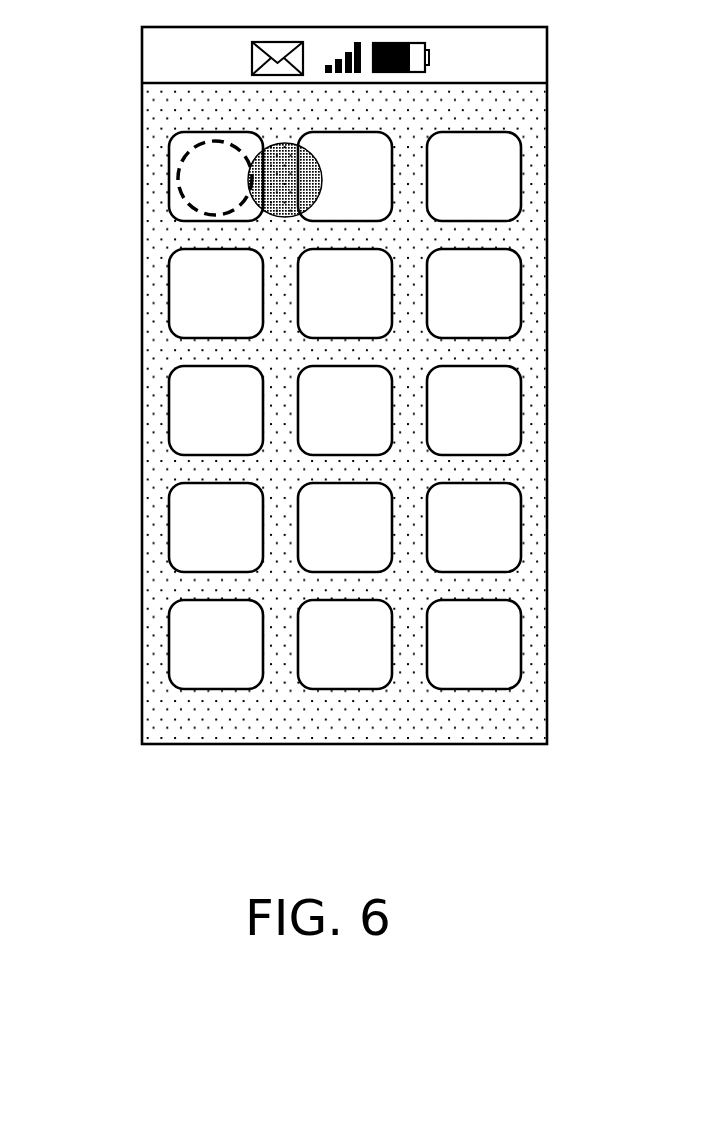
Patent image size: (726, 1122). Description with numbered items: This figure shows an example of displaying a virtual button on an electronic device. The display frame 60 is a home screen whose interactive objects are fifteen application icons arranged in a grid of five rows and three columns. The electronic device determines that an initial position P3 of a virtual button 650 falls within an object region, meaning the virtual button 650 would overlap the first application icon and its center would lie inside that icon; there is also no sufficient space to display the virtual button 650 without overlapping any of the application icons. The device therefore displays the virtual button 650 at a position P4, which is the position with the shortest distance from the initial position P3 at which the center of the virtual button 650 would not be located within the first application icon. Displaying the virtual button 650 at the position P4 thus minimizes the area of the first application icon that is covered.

The display frame 60 is at (547, 276).
The initial position P3 is at (183, 178).
The position P4 is at (280, 155).
The virtual button 650 is at (179, 200).